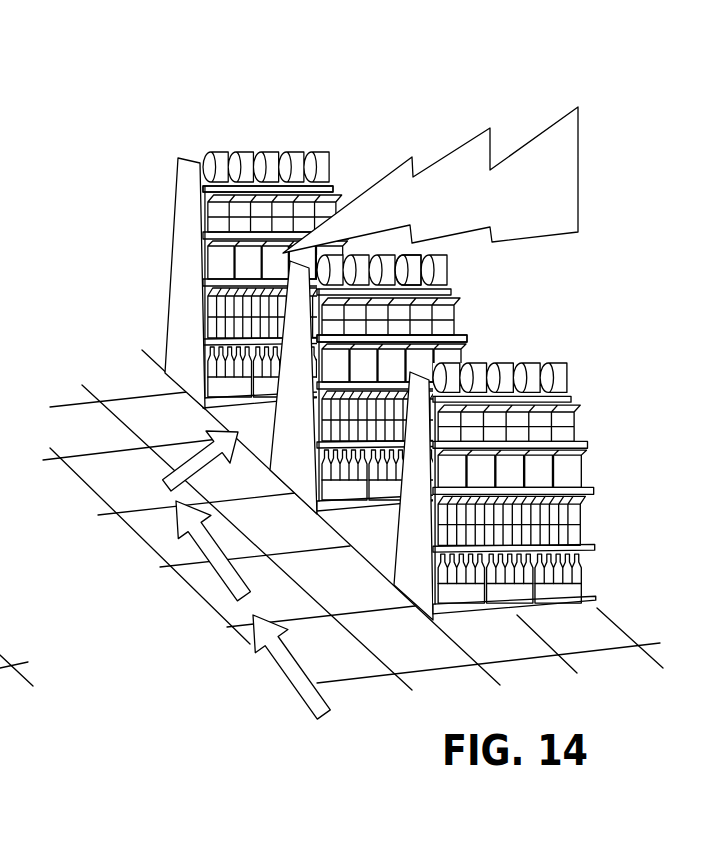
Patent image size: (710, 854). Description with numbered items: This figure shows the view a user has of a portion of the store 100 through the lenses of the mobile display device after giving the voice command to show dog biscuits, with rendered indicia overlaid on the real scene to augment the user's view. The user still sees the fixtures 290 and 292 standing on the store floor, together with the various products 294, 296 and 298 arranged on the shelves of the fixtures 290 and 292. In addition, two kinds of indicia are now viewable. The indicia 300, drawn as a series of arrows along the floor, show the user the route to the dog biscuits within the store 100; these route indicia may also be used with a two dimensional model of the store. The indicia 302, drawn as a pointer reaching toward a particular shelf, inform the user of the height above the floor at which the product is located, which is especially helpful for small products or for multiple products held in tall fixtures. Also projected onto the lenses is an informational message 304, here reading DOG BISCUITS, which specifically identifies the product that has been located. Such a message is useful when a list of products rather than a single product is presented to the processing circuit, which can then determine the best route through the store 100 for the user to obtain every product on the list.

The store 100 is at (342, 403).
The fixture 290 is at (224, 260).
The fixture 292 is at (271, 463).
The product 294 is at (340, 190).
The product 296 is at (398, 259).
The product 298 is at (468, 346).
The indicia 300 is at (162, 483).
The indicia 302 is at (463, 170).
The informational message 304 is at (552, 198).